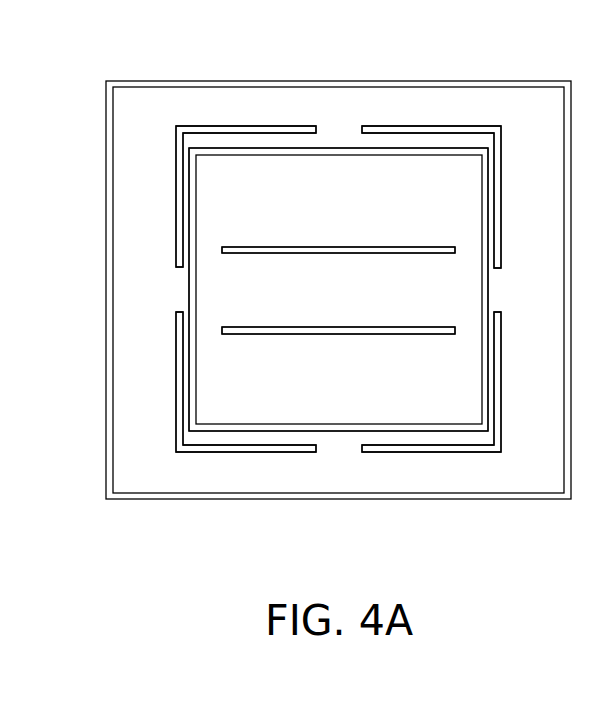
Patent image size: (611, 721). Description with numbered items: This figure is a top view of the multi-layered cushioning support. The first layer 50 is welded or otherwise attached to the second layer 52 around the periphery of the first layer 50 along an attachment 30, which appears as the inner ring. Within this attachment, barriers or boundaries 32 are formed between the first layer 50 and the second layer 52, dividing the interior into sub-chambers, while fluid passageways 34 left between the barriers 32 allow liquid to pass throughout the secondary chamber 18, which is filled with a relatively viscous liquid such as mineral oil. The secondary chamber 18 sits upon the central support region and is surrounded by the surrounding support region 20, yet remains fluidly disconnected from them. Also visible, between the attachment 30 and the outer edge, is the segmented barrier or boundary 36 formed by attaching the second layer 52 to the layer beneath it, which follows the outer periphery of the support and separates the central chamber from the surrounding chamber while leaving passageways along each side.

The secondary chamber 18 is at (375, 172).
The surrounding support region 20 is at (231, 94).
The attachment 30 is at (265, 134).
The barriers or boundaries 32 is at (435, 246).
The fluid passageways 34 is at (210, 250).
The barrier or boundary 36 is at (457, 127).
The first layer 50 is at (339, 148).
The second layer 52 is at (173, 100).